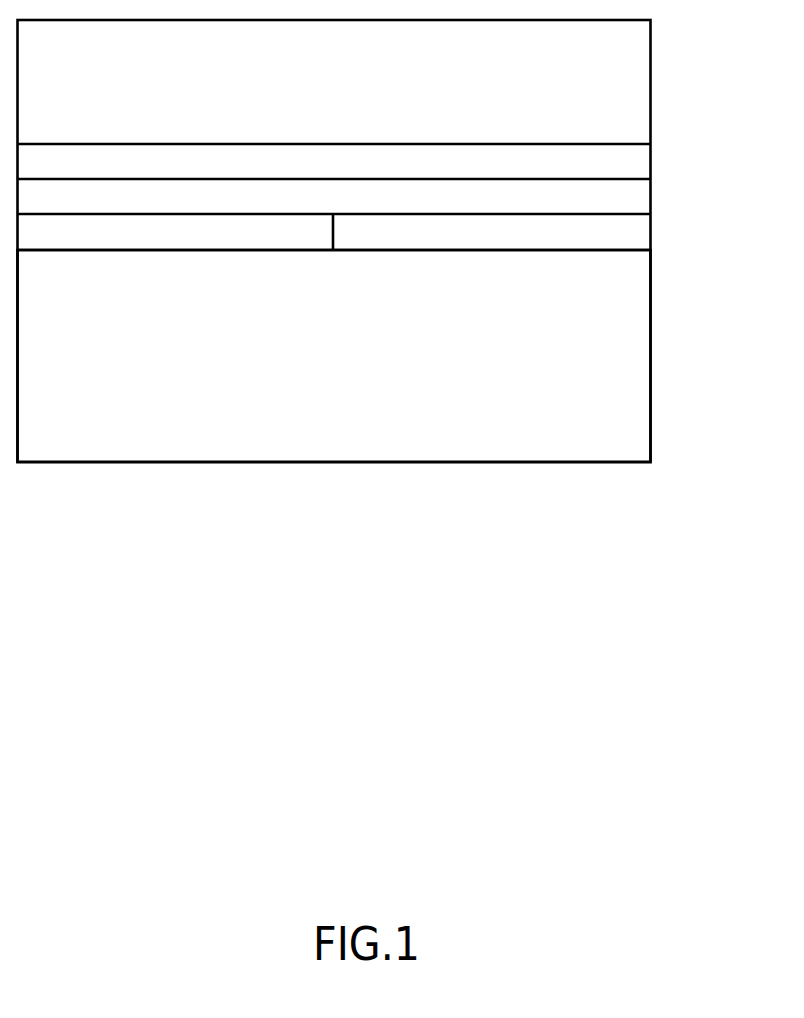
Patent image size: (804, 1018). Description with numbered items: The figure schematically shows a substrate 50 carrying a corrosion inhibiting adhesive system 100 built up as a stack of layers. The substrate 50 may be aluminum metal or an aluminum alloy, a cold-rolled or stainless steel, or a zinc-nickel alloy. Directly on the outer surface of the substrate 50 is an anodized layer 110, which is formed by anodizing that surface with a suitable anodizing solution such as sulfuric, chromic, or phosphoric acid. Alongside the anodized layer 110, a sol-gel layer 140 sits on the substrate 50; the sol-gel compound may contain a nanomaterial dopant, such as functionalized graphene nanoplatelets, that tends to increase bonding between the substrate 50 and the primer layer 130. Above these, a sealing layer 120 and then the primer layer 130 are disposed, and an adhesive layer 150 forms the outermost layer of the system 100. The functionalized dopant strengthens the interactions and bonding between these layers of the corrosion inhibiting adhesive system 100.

The corrosion inhibiting adhesive system 100 is at (666, 20).
The substrate 50 is at (347, 365).
The anodized layer 110 is at (157, 243).
The sol-gel layer 140 is at (473, 243).
The sealing layer 120 is at (315, 207).
The primer layer 130 is at (315, 172).
The adhesive layer 150 is at (315, 92).